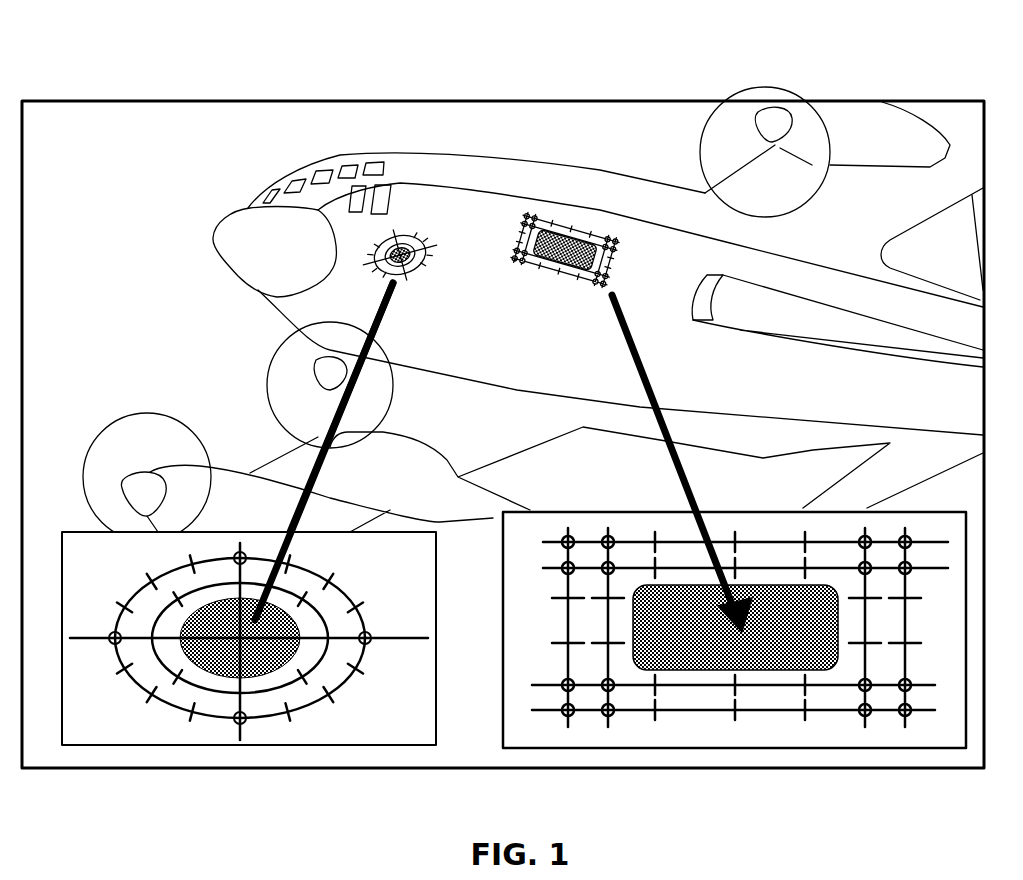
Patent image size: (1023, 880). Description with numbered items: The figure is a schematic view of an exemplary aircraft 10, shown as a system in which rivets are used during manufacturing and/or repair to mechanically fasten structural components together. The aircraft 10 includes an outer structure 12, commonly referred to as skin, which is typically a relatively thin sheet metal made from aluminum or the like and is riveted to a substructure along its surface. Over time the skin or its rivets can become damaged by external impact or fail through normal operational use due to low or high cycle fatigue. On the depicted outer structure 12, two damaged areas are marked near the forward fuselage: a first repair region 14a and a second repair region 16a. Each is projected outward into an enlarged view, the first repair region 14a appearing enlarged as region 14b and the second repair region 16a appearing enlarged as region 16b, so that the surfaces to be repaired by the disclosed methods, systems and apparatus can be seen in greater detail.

The aircraft 10 is at (492, 58).
The outer structure 12 is at (445, 338).
The first repair region 14a is at (413, 237).
The second repair region 16a is at (597, 240).
The enlarged first repair region 14b is at (358, 722).
The enlarged second repair region 16b is at (647, 730).